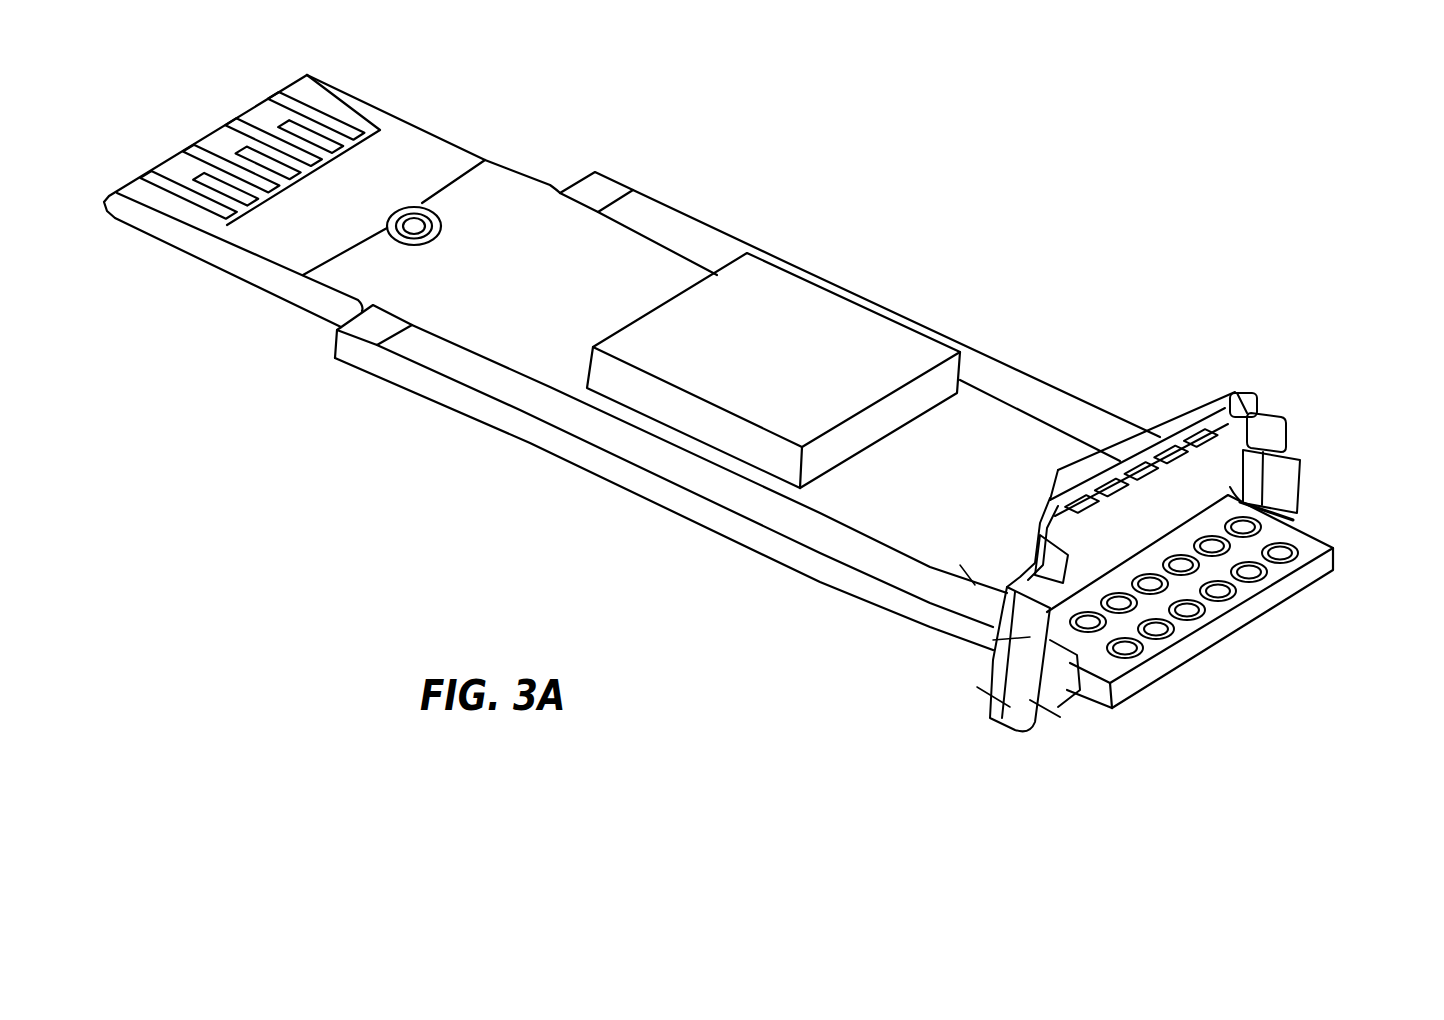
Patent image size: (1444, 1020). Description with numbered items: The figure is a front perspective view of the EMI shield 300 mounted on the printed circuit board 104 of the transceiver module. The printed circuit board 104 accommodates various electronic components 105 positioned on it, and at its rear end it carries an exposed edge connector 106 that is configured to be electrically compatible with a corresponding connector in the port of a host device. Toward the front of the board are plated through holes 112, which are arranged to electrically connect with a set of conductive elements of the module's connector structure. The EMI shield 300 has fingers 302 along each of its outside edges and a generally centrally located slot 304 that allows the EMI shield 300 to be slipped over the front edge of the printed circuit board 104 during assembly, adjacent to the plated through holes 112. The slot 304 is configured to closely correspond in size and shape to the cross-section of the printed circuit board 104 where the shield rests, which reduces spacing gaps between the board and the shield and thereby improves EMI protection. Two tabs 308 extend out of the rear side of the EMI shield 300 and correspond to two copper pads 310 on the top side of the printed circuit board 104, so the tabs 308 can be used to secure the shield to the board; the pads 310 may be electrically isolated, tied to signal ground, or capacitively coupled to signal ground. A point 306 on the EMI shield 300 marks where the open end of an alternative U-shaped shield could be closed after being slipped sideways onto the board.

The printed circuit board 104 is at (628, 531).
The electronic components 105 is at (803, 333).
The edge connector 106 is at (307, 53).
The plated through holes 112 is at (1170, 693).
The EMI shield 300 is at (1275, 367).
The fingers 302 is at (1243, 382).
The slot 304 is at (1186, 545).
The point 306 is at (978, 647).
The tabs 308 is at (968, 640).
The copper pads 310 is at (993, 640).